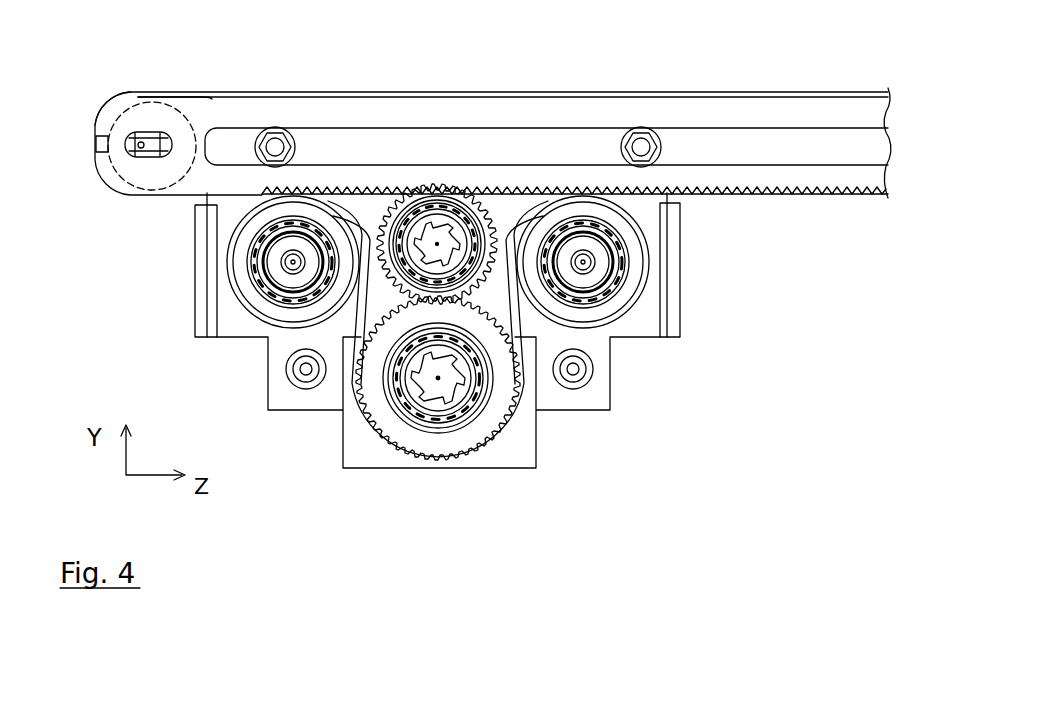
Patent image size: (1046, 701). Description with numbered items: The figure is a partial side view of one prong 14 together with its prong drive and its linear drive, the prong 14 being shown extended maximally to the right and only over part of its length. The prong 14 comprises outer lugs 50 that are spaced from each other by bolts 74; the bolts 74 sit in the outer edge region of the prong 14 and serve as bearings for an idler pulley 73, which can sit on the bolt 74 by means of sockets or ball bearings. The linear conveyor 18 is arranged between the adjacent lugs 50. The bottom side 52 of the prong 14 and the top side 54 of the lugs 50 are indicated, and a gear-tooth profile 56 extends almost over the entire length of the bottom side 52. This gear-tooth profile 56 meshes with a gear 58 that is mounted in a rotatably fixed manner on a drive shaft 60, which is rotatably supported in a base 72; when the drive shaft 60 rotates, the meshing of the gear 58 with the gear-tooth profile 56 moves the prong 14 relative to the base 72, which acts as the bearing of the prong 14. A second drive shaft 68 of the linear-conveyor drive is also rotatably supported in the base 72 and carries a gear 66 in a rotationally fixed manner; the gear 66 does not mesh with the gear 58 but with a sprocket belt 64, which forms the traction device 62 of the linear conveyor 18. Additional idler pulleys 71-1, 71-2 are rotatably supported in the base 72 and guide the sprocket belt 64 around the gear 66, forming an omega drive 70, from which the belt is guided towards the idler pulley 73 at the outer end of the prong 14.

The prong 14 is at (94, 185).
The linear conveyor 18 is at (536, 86).
The outer lug 50 is at (98, 118).
The bottom side 52 is at (150, 205).
The top side 54 is at (122, 90).
The gear-tooth profile 56 is at (743, 203).
The gear 58 is at (492, 212).
The drive shaft 60 is at (438, 240).
The traction device 62 is at (524, 321).
The sprocket belt 64 is at (360, 425).
The gear 66 is at (464, 456).
The drive shaft 68 is at (432, 388).
The omega drive 70 is at (578, 448).
The idler pulley 71-1 is at (262, 311).
The idler pulley 71-2 is at (623, 317).
The base 72 is at (688, 301).
The idler pulley 73 is at (190, 118).
The bolt 74 is at (152, 143).